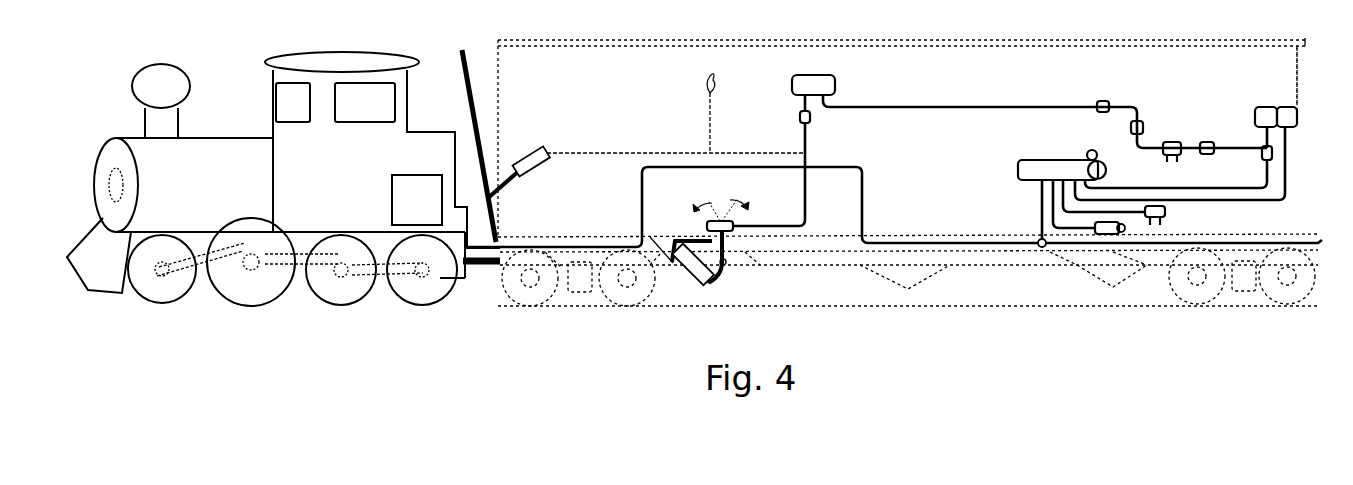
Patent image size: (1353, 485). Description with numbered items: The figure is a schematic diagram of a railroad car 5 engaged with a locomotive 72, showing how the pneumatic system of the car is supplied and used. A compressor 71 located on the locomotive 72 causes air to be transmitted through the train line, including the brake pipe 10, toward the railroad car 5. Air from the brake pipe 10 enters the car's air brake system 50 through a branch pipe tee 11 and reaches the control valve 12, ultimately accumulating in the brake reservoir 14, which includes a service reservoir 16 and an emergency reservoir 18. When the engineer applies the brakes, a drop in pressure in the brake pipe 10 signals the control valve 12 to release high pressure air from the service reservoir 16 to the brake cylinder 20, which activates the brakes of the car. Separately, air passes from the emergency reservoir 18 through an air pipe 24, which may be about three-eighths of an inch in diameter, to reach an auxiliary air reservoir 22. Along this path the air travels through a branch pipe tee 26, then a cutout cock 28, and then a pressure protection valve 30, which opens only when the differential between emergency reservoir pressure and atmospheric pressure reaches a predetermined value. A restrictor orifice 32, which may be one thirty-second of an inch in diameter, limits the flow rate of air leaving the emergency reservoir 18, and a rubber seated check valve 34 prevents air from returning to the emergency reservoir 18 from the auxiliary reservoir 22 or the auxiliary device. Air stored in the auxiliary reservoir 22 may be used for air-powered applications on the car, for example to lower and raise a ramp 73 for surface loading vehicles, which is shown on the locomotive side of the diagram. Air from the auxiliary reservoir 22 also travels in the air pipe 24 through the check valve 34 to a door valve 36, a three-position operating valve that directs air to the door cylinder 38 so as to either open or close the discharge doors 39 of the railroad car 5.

The railroad car 5 is at (690, 40).
The brake pipe 10 is at (1262, 135).
The branch pipe tee 11 is at (1042, 248).
The control valve 12 is at (1088, 157).
The brake reservoir 14 is at (1291, 105).
The service reservoir 16 is at (1298, 122).
The emergency reservoir 18 is at (1267, 107).
The brake cylinder 20 is at (1107, 238).
The auxiliary air reservoir 22 is at (790, 85).
The air pipe 24 is at (965, 105).
The branch pipe tee 26 is at (1258, 151).
The cutout cock 28 is at (1209, 143).
The pressure protection valve 30 is at (1174, 143).
The restrictor orifice 32 is at (1143, 123).
The check valve 34 is at (800, 118).
The door valve 36 is at (706, 226).
The door cylinder 38 is at (685, 280).
The discharge doors 39 is at (727, 268).
The air brake system 50 is at (1048, 87).
The compressor 71 is at (411, 176).
The locomotive 72 is at (253, 147).
The ramp 73 is at (462, 47).